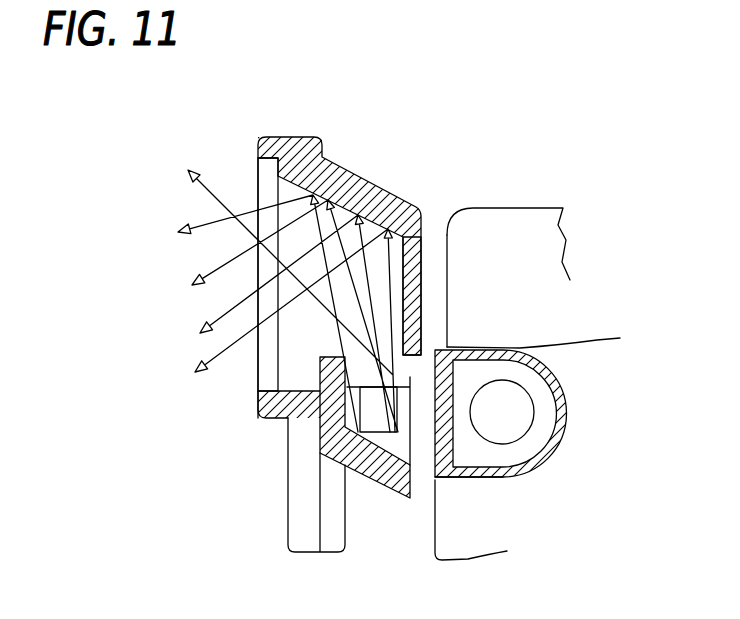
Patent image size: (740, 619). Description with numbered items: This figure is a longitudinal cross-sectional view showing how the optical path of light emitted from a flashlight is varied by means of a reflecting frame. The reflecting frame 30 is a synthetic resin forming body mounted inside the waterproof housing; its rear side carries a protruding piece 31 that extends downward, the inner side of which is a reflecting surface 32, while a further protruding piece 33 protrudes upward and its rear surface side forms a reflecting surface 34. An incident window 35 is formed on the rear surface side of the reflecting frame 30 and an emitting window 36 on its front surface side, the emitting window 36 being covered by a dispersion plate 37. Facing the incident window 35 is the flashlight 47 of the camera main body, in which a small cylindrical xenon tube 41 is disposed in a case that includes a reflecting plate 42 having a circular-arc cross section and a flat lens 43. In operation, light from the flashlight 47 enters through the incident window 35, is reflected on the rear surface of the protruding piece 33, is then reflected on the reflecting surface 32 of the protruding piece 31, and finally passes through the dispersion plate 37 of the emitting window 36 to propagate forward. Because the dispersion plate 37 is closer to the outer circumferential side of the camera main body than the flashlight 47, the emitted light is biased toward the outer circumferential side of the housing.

The reflecting frame 30 is at (342, 160).
The protruding piece 31 is at (440, 232).
The reflecting surface 32 is at (399, 258).
The protruding piece 33 is at (322, 368).
The reflecting surface 34 is at (347, 470).
The incident window 35 is at (415, 435).
The emitting window 36 is at (290, 367).
The dispersion plate 37 is at (268, 190).
The xenon tube 41 is at (520, 410).
The reflecting plate 42 is at (547, 348).
The flat lens 43 is at (450, 447).
The flashlight 47 is at (530, 258).